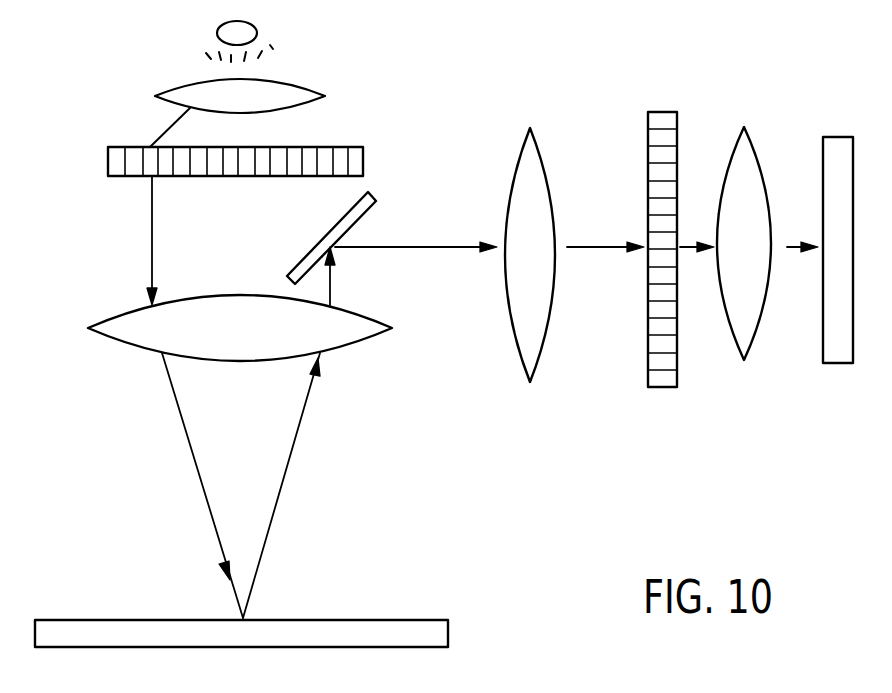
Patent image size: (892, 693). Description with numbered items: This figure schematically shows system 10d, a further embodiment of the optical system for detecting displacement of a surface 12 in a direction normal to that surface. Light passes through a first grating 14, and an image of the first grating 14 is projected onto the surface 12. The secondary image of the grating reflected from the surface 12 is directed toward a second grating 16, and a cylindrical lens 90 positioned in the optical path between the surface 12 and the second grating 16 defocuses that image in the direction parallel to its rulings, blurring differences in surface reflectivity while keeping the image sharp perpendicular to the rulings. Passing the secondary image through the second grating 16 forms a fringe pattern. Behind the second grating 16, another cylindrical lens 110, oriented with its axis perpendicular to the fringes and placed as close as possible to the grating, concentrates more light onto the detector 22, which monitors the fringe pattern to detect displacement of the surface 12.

The system 10d is at (430, 27).
The first grating 14 is at (108, 163).
The surface 12 is at (345, 620).
The cylindrical lens 90 is at (522, 364).
The second grating 16 is at (660, 112).
The cylindrical lens 110 is at (750, 352).
The detector 22 is at (836, 137).